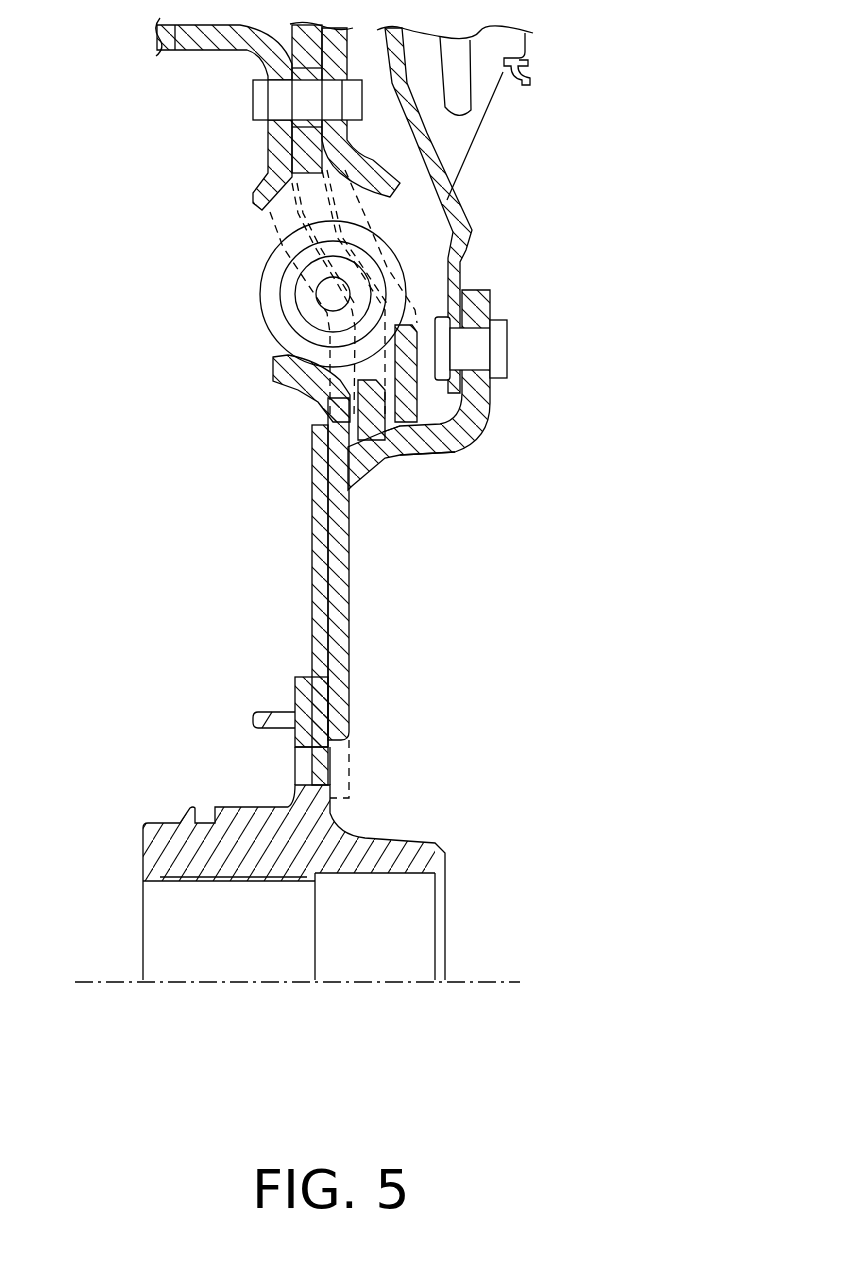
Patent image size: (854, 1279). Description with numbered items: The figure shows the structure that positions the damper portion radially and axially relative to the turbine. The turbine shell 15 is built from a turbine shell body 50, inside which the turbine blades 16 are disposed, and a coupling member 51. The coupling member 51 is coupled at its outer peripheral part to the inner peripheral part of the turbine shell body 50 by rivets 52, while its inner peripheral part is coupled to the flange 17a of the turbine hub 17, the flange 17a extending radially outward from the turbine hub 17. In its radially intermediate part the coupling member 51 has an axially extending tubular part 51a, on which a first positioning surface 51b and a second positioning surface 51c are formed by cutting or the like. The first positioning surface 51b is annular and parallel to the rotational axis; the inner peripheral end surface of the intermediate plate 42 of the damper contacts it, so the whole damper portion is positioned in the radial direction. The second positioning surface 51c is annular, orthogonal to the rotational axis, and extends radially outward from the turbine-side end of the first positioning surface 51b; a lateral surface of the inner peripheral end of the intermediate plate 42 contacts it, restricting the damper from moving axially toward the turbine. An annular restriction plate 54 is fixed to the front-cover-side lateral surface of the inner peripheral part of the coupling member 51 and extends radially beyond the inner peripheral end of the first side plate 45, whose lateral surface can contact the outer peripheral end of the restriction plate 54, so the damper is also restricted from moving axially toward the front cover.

The turbine shell 15 is at (508, 115).
The turbine blades 16 is at (517, 63).
The turbine hub 17 is at (377, 878).
The flange 17a is at (310, 698).
The intermediate plate 42 is at (370, 412).
The first side plate 45 is at (288, 372).
The turbine shell body 50 is at (468, 200).
The coupling member 51 is at (480, 410).
The tubular part 51a is at (453, 445).
The first positioning surface 51b is at (323, 428).
The second positioning surface 51c is at (390, 435).
The rivets 52 is at (498, 347).
The restriction plate 54 is at (325, 553).